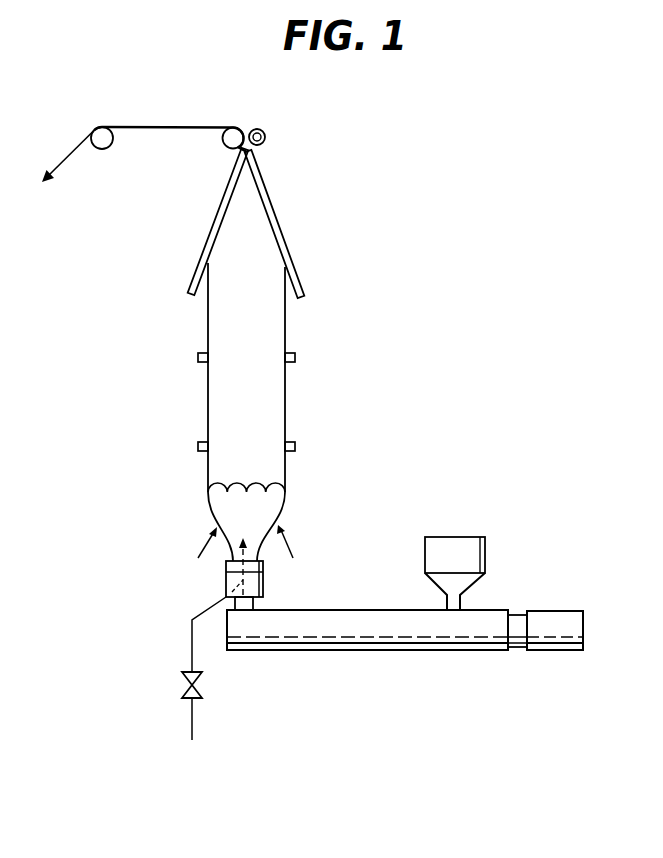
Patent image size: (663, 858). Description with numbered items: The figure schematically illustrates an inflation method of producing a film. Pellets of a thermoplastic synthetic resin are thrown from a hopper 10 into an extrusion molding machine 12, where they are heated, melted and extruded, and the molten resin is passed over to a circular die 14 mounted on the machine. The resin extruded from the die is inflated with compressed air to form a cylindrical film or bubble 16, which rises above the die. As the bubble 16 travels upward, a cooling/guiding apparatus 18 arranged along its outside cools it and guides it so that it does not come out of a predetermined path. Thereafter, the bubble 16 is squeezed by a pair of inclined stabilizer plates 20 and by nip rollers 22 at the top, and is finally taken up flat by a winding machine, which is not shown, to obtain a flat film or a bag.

The hopper 10 is at (468, 552).
The extrusion molding machine 12 is at (405, 635).
The circular die 14 is at (263, 575).
The bubble 16 is at (285, 398).
The cooling/guiding apparatus 18 is at (291, 352).
The stabilizer plates 20 is at (278, 218).
The nip rollers 22 is at (265, 132).